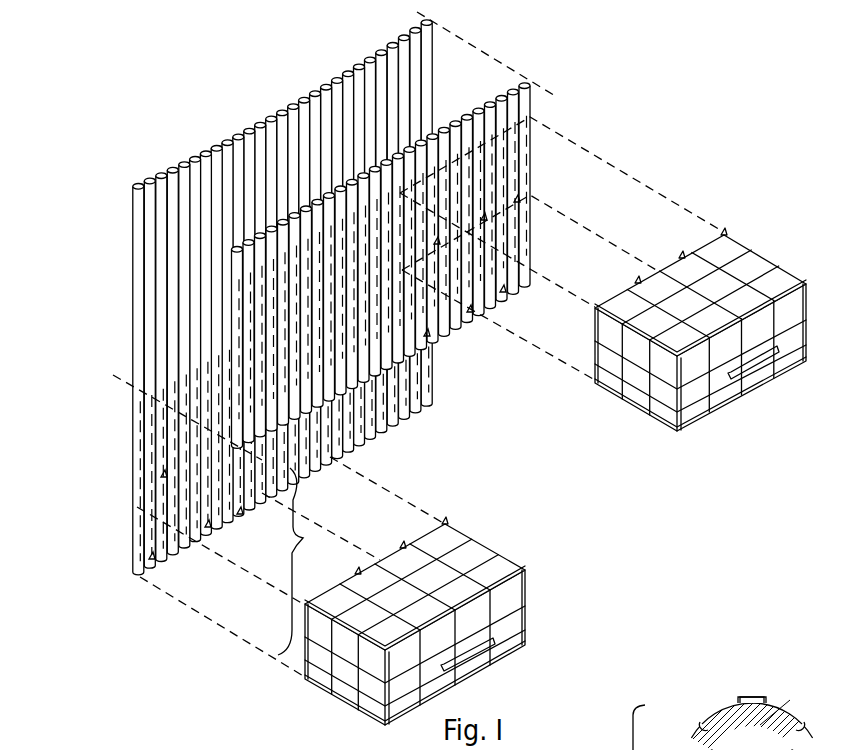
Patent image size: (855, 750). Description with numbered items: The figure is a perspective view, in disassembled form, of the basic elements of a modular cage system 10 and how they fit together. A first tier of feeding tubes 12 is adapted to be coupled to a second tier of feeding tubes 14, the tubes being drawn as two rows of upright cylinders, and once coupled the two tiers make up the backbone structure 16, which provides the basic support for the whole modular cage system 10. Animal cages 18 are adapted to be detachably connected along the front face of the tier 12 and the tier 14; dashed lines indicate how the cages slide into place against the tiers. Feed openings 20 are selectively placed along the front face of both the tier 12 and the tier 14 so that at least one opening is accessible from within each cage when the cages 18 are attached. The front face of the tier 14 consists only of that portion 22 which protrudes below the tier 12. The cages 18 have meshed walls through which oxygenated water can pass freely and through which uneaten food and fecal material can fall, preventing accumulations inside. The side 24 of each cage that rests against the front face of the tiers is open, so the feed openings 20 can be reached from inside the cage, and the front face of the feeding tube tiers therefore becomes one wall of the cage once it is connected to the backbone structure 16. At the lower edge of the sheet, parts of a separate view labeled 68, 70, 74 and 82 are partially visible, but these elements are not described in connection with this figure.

The modular cage system 10 is at (426, 368).
The first tier of feeding tubes 12 is at (530, 162).
The second tier of feeding tubes 14 is at (433, 83).
The backbone structure 16 is at (254, 350).
The animal cages 18 is at (643, 415).
The feed openings 20 is at (503, 289).
The protruding portion of the second tier front face 22 is at (318, 536).
The open side of the cage 24 is at (673, 236).
The toothed ring 68 is at (808, 730).
The tooth 70 is at (742, 702).
The ring body 74 is at (775, 712).
The shaft 82 is at (654, 727).